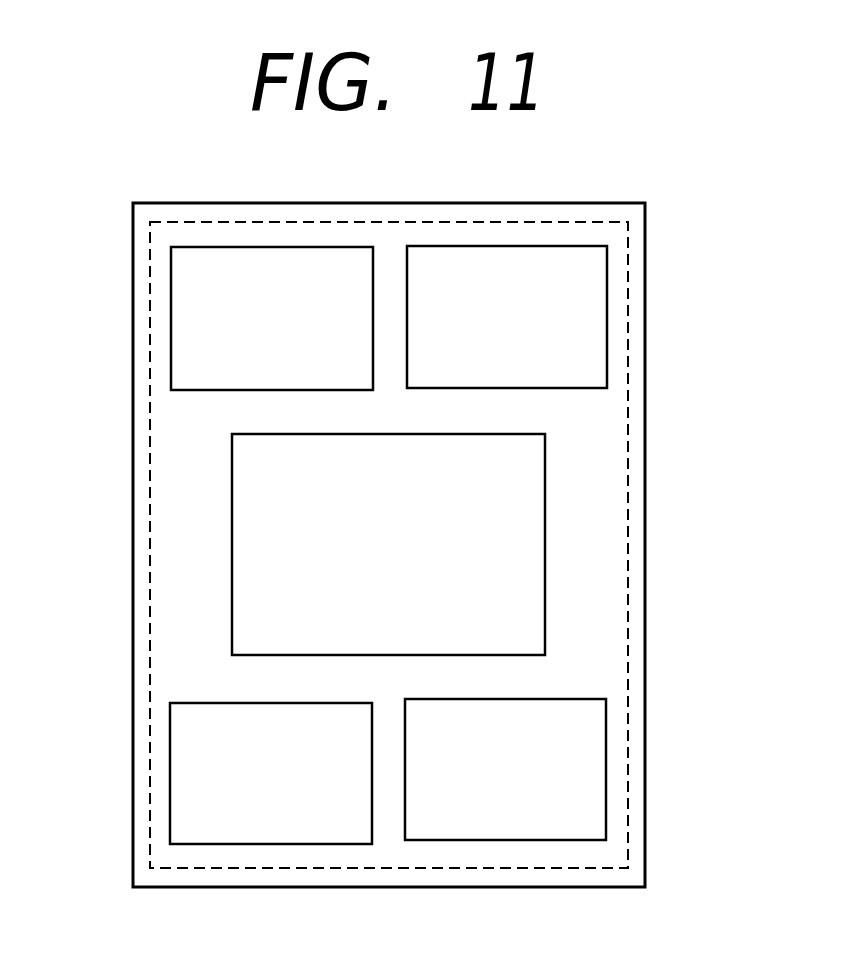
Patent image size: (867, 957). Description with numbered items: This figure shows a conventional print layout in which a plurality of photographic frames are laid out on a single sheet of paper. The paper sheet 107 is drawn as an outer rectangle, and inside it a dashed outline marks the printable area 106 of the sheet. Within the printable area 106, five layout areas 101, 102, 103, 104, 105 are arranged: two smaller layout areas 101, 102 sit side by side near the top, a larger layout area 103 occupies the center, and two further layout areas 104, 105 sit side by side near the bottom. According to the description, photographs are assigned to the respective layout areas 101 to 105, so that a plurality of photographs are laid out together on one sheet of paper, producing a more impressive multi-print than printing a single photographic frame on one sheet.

The layout area 101 is at (171, 318).
The layout area 102 is at (607, 297).
The layout area 103 is at (232, 550).
The layout area 104 is at (170, 806).
The layout area 105 is at (606, 784).
The printable area 106 is at (628, 522).
The paper sheet 107 is at (645, 672).